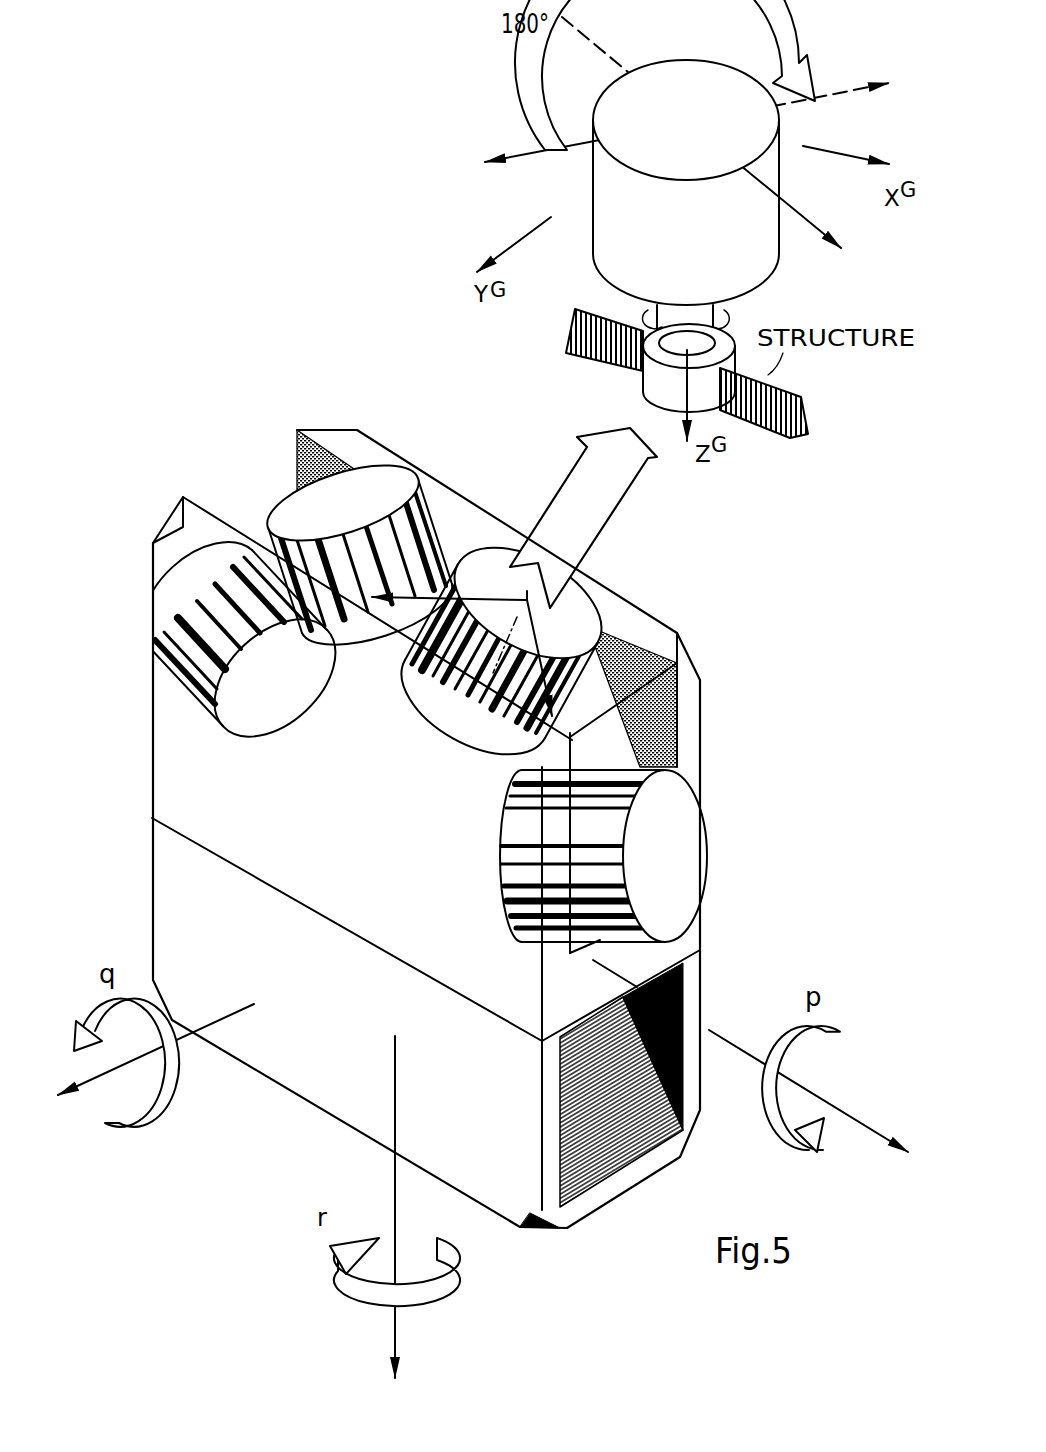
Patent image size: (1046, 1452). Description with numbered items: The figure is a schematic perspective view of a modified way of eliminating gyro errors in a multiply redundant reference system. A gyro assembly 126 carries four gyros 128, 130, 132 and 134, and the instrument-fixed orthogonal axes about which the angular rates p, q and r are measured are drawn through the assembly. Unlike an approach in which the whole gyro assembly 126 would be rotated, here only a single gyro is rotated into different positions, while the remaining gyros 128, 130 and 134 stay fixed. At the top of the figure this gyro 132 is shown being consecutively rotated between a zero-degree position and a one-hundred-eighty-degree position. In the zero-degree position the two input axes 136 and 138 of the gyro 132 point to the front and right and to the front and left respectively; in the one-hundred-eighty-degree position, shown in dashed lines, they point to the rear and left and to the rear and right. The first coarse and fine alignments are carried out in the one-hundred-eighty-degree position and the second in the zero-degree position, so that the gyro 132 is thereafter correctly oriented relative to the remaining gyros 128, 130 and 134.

The gyro assembly 126 is at (451, 810).
The gyro 128 is at (202, 585).
The gyro 130 is at (393, 488).
The gyro 132 is at (577, 620).
The gyro 134 is at (677, 863).
The input axis 136 is at (801, 217).
The input axis 138 is at (518, 164).